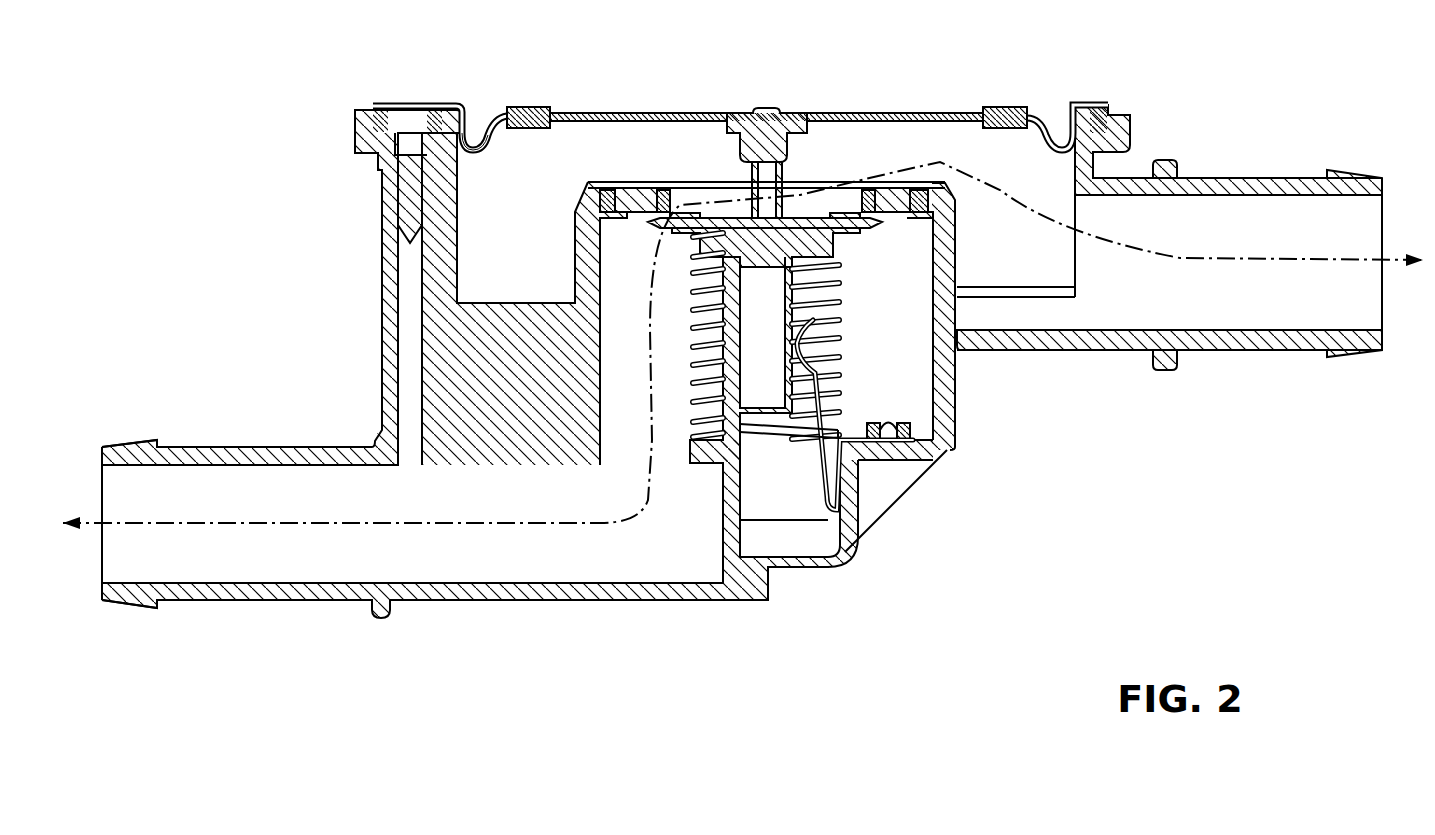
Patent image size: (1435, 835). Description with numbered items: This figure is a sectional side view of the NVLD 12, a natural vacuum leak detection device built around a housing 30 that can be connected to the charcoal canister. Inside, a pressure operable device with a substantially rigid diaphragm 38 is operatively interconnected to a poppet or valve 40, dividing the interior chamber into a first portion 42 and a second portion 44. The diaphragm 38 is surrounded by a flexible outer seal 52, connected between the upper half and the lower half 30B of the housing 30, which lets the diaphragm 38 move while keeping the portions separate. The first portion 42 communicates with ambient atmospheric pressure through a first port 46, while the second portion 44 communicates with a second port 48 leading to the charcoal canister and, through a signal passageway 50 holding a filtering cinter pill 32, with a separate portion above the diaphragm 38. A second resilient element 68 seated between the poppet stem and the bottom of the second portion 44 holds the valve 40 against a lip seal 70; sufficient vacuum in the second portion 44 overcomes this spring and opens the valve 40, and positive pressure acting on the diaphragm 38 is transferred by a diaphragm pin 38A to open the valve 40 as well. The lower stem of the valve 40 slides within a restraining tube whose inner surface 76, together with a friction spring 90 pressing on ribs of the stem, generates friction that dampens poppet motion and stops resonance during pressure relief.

The NVLD 12 is at (992, 440).
The housing 30 is at (275, 592).
The lower half 30B is at (383, 390).
The cinter pill 32 is at (407, 203).
The diaphragm 38 is at (688, 112).
The diaphragm pin 38A is at (795, 158).
The valve 40 is at (888, 298).
The first portion 42 is at (1027, 275).
The second portion 44 is at (660, 398).
The first port 46 is at (1230, 202).
The second port 48 is at (120, 448).
The signal passageway 50 is at (400, 253).
The flexible outer seal 52 is at (492, 130).
The second resilient element 68 is at (833, 357).
The lip seal 70 is at (859, 190).
The inner surface 76 is at (745, 462).
The friction spring 90 is at (815, 508).